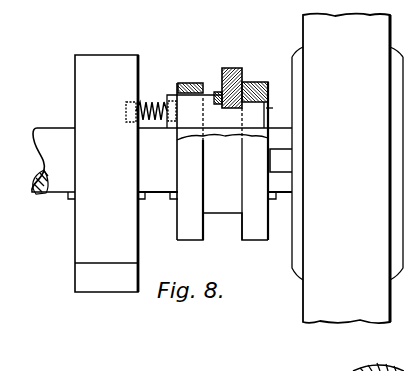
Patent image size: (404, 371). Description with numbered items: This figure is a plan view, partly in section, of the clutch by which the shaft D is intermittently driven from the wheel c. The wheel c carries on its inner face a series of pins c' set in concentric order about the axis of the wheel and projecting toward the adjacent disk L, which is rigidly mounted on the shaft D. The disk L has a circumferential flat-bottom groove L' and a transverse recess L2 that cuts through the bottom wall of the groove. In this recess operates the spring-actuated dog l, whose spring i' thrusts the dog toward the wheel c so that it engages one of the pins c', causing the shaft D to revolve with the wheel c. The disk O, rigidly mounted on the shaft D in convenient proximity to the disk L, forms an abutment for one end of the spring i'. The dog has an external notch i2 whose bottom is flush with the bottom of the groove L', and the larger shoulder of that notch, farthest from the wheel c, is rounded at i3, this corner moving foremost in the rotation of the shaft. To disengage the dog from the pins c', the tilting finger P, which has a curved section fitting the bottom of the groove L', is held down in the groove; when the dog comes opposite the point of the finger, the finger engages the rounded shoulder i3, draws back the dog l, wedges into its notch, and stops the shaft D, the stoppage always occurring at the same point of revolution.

The shaft D is at (162, 163).
The disk O is at (106, 173).
The spring i' is at (151, 102).
The external notch i2 is at (223, 108).
The rounded shoulder i3 is at (217, 94).
The tilting finger P is at (233, 76).
The spring-actuated dog l is at (217, 161).
The transverse recess L2 is at (274, 108).
The disk L is at (222, 188).
The circumferential flat-bottom groove L' is at (235, 190).
The wheel c is at (347, 168).
The pins c' is at (281, 160).